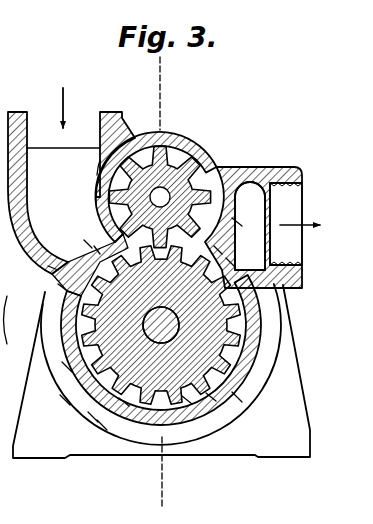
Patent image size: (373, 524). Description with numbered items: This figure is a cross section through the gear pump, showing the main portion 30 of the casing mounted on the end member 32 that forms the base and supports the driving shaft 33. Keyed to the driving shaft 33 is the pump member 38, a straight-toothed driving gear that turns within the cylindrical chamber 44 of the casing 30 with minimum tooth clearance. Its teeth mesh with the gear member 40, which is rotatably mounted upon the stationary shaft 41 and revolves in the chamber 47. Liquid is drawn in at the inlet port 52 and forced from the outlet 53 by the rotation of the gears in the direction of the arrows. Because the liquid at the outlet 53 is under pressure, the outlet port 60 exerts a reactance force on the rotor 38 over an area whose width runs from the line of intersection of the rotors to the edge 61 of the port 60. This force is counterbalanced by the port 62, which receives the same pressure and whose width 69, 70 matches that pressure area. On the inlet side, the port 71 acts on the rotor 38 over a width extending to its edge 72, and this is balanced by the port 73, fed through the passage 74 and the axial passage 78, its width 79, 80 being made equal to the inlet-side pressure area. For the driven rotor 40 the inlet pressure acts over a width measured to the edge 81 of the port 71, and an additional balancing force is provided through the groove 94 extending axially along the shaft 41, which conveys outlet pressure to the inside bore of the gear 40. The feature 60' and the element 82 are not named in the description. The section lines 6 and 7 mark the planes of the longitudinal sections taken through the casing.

The section line 6— 6 is at (154, 78).
The section line 7— 7 is at (185, 78).
The main portion of the casing 30 is at (136, 130).
The gear member 40 is at (180, 140).
The inlet port 52 is at (45, 125).
The chamber 47 is at (100, 168).
The stationary shaft 41 is at (96, 197).
The groove 94 is at (222, 202).
The edge of port 71 81 is at (88, 244).
The port 71 is at (96, 250).
The passage 74 is at (52, 268).
The edge of port 71 72 is at (62, 287).
The top wall 82 is at (222, 160).
The passage 60' is at (283, 207).
The outlet port 60 is at (236, 239).
The edge of port 60 61 is at (230, 262).
The outlet 53 is at (283, 246).
The driving shaft 33 is at (168, 328).
The width limit of port 73 80 is at (240, 378).
The axial passage 78 is at (237, 397).
The end member 32 is at (267, 437).
The chamber 44 is at (67, 367).
The width limit of port 62 70 is at (65, 400).
The port 62 is at (93, 417).
The pump member 38 is at (102, 425).
The width limit of port 62 69 is at (124, 402).
The width limit of port 73 79 is at (187, 400).
The port 73 is at (211, 397).